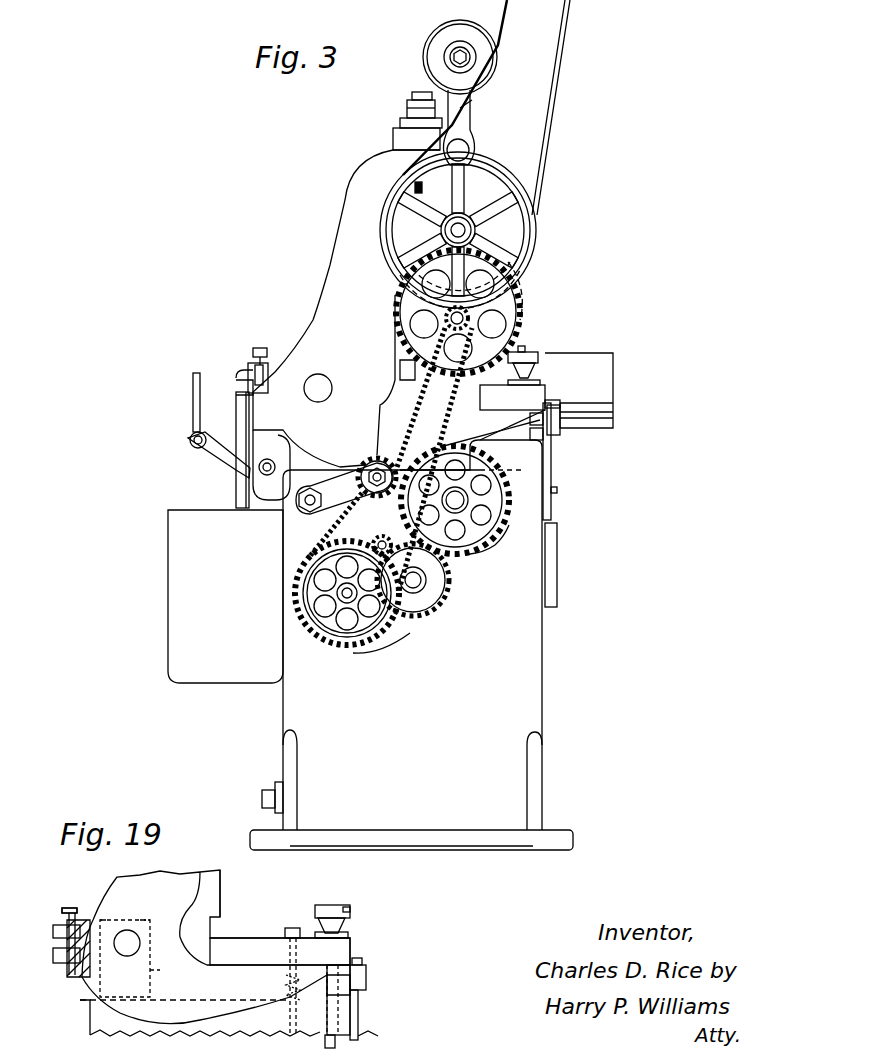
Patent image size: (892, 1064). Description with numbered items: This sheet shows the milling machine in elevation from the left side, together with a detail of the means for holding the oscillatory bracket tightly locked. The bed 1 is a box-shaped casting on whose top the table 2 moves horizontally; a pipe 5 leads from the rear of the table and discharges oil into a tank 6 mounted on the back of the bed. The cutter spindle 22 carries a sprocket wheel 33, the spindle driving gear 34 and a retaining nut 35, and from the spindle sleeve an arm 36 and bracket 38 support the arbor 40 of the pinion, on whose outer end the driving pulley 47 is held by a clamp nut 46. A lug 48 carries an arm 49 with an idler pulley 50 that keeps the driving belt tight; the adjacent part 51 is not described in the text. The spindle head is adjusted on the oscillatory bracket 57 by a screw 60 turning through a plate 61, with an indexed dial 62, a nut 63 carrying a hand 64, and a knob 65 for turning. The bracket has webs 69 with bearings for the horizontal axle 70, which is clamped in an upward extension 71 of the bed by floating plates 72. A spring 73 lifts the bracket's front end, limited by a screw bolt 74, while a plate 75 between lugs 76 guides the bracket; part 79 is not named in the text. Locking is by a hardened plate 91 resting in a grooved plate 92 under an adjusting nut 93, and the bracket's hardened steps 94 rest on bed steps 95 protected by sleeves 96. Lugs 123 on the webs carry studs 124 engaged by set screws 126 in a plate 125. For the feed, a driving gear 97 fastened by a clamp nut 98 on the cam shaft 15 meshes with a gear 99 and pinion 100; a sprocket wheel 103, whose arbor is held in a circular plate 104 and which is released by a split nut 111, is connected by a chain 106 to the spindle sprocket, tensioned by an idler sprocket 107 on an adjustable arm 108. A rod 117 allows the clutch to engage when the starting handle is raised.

In FIG. 3, the bed 1 is at (411, 635).
In FIG. 19, the bed 1 is at (90, 1022).
In FIG. 3, the table 2 is at (579, 390).
In FIG. 3, the pipe 5 is at (236, 487).
In FIG. 3, the tank 6 is at (225, 596).
In FIG. 3, the cam shaft 15 is at (455, 500).
In FIG. 3, the cutter spindle 22 is at (492, 312).
In FIG. 3, the sprocket wheel 33 is at (520, 300).
In FIG. 3, the spindle driving gear 34 is at (522, 333).
In FIG. 3, the nut 35 is at (444, 314).
In FIG. 3, the arm 36 is at (461, 228).
In FIG. 3, the bracket 38 is at (485, 183).
In FIG. 3, the arbor 40 is at (440, 232).
In FIG. 3, the clamp nut 46 is at (412, 268).
In FIG. 3, the driving pulley 47 is at (540, 195).
In FIG. 3, the lug 48 is at (470, 146).
In FIG. 3, the arm 49 is at (470, 120).
In FIG. 3, the idler pulley 50 is at (460, 57).
In FIG. 3, the pulley flange 51 is at (510, 283).
In FIG. 3, the oscillatory bracket 57 is at (395, 165).
In FIG. 19, the oscillatory bracket 57 is at (220, 885).
In FIG. 3, the screw 60 is at (422, 188).
In FIG. 3, the plate 61 is at (393, 140).
In FIG. 3, the indexed dial 62 is at (400, 122).
In FIG. 3, the nut 63 is at (407, 105).
In FIG. 3, the hand 64 is at (470, 108).
In FIG. 3, the knob 65 is at (415, 92).
In FIG. 3, the web 69 is at (300, 340).
In FIG. 19, the web 69 is at (140, 880).
In FIG. 3, the horizontal axle 70 is at (318, 388).
In FIG. 19, the horizontal axle 70 is at (140, 943).
In FIG. 19, the upward extension 71 is at (160, 972).
In FIG. 19, the floating plates 72 is at (130, 920).
In FIG. 19, the spring 73 is at (286, 980).
In FIG. 19, the screw bolt 74 is at (285, 933).
In FIG. 3, the plate 75 is at (551, 473).
In FIG. 19, the plate 75 is at (358, 1025).
In FIG. 3, the lugs 76 is at (560, 428).
In FIG. 19, the lugs 76 is at (366, 968).
In FIG. 3, the bolt 79 is at (525, 349).
In FIG. 19, the bolt 79 is at (335, 1043).
In FIG. 3, the hardened plate 91 is at (535, 368).
In FIG. 19, the hardened plate 91 is at (345, 922).
In FIG. 3, the plate 92 is at (540, 383).
In FIG. 19, the plate 92 is at (348, 936).
In FIG. 3, the adjusting nut 93 is at (538, 355).
In FIG. 19, the adjusting nut 93 is at (339, 903).
In FIG. 3, the hardened steps 94 is at (535, 412).
In FIG. 19, the hardened steps 94 is at (362, 980).
In FIG. 3, the hardened steps 95 is at (470, 500).
In FIG. 19, the hardened steps 95 is at (350, 990).
In FIG. 3, the sleeves 96 is at (530, 420).
In FIG. 3, the driving gear 97 is at (502, 540).
In FIG. 3, the clamp nut 98 is at (488, 556).
In FIG. 3, the gear 99 is at (448, 590).
In FIG. 3, the pinion 100 is at (385, 532).
In FIG. 3, the sprocket wheel 103 is at (315, 607).
In FIG. 3, the circular plate 104 is at (402, 640).
In FIG. 3, the chain 106 is at (410, 445).
In FIG. 3, the idler sprocket 107 is at (375, 458).
In FIG. 3, the adjustable arm 108 is at (344, 488).
In FIG. 3, the split nut 111 is at (295, 597).
In FIG. 3, the rod 117 is at (192, 395).
In FIG. 3, the lugs 123 is at (255, 396).
In FIG. 19, the lugs 123 is at (72, 980).
In FIG. 3, the studs 124 is at (270, 392).
In FIG. 19, the studs 124 is at (60, 966).
In FIG. 3, the plate 125 is at (248, 368).
In FIG. 19, the plate 125 is at (62, 912).
In FIG. 3, the set screws 126 is at (258, 348).
In FIG. 19, the set screws 126 is at (78, 915).